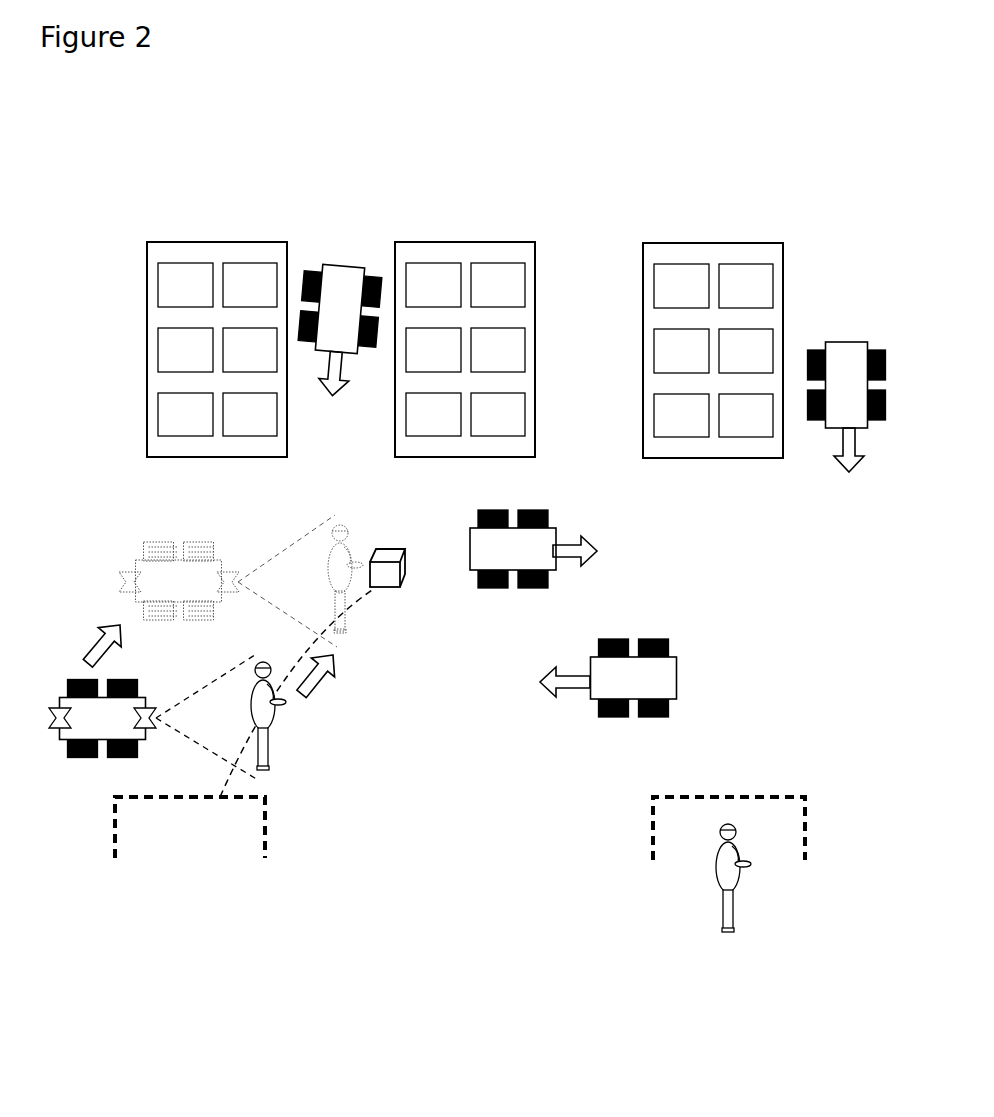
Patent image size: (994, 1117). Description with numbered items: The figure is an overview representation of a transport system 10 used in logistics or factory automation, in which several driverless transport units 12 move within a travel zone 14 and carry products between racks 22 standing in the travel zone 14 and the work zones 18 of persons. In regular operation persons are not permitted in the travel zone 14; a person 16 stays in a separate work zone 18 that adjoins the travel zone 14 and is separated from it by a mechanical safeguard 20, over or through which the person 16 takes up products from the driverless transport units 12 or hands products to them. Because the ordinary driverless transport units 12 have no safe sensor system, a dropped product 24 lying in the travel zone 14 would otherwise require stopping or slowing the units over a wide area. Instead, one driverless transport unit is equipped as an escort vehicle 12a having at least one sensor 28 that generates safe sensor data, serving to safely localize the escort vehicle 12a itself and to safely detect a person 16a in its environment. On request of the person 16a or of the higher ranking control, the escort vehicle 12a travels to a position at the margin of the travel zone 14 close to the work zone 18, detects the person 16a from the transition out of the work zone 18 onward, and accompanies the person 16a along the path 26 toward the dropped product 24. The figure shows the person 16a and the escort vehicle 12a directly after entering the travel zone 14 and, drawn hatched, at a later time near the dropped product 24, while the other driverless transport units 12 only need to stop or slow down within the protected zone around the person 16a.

The transport system 10 is at (780, 178).
The driverless transport unit 12 is at (343, 268).
The escort vehicle 12a is at (103, 740).
The travel zone 14 is at (798, 557).
The person 16 is at (730, 880).
The person 16a is at (275, 723).
The work zone 18 is at (243, 835).
The mechanical safeguard 20 is at (115, 823).
The rack 22 is at (183, 237).
The dropped product 24 is at (388, 557).
The path 26 is at (357, 598).
The sensor 28 is at (140, 718).